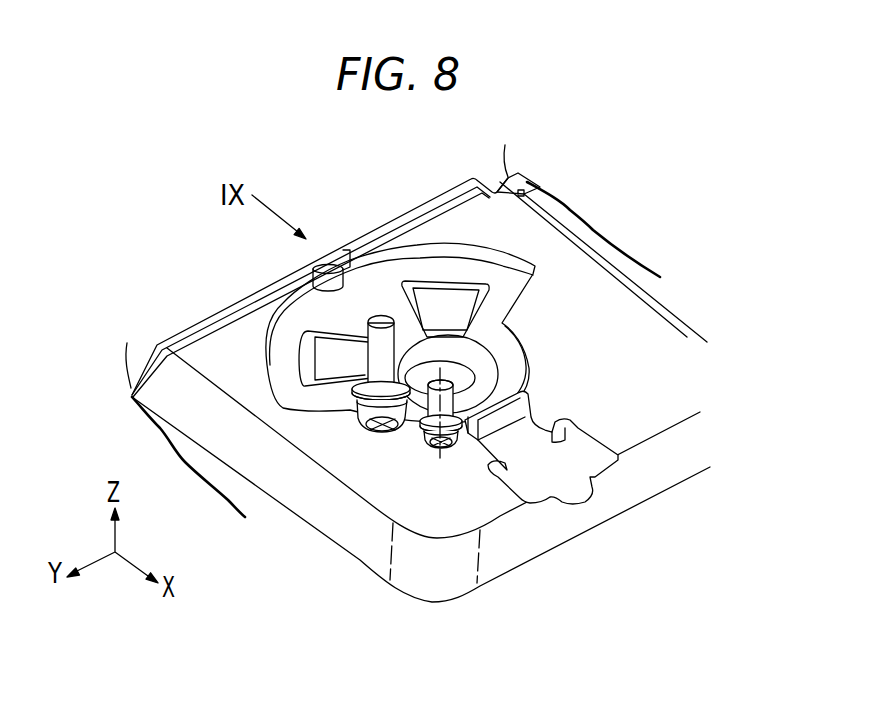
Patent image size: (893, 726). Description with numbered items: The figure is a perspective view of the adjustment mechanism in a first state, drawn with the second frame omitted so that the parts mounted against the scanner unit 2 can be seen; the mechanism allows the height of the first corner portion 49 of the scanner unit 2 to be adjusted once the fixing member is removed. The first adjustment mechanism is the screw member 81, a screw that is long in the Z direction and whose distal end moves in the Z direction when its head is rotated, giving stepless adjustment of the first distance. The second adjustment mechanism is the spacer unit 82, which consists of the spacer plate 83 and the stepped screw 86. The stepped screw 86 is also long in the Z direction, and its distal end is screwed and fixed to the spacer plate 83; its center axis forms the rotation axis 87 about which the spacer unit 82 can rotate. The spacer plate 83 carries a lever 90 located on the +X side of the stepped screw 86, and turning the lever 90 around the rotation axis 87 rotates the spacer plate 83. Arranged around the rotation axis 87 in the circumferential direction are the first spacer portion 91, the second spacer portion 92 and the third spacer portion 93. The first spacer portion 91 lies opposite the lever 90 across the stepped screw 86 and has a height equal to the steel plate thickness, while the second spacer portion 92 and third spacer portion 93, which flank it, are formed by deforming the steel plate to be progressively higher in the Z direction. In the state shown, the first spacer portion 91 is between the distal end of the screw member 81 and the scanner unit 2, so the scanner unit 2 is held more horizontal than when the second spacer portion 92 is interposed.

The scanner unit 2 is at (178, 335).
The first corner portion 49 is at (223, 337).
The screw member 81 is at (368, 428).
The spacer unit 82 is at (538, 345).
The spacer plate 83 is at (520, 282).
The stepped screw 86 is at (423, 447).
The rotation axis 87 is at (440, 458).
The lever 90 is at (542, 490).
The first spacer portion 91 is at (377, 315).
The second spacer portion 92 is at (315, 356).
The third spacer portion 93 is at (437, 297).